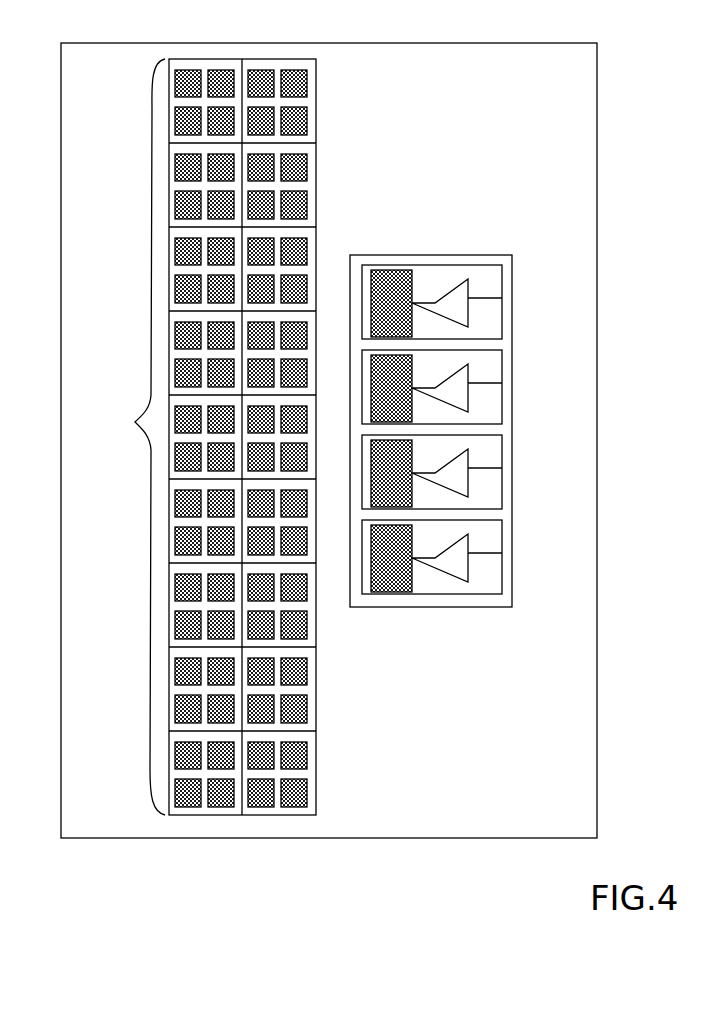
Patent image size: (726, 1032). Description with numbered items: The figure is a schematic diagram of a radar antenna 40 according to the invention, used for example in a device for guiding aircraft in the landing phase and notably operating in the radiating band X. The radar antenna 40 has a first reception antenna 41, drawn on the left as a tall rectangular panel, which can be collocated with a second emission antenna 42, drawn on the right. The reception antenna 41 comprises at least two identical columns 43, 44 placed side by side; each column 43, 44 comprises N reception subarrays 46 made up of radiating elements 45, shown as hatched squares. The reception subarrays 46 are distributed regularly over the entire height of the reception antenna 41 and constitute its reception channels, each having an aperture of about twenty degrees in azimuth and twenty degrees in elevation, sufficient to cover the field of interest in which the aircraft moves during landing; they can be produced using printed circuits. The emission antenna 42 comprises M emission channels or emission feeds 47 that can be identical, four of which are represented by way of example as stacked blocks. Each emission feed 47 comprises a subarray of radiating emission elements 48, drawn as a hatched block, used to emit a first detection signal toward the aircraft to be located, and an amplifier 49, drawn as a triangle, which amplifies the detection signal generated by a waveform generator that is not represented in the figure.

The radar antenna 40 is at (453, 840).
The first reception antenna 41 is at (273, 488).
The second emission antenna 42 is at (456, 427).
The column 43 is at (203, 815).
The column 44 is at (283, 815).
The radiating elements 45 is at (175, 417).
The reception subarray 46 is at (130, 437).
The emission feed 47 is at (462, 393).
The subarray of radiating emission elements 48 is at (392, 266).
The amplifier 49 is at (455, 284).